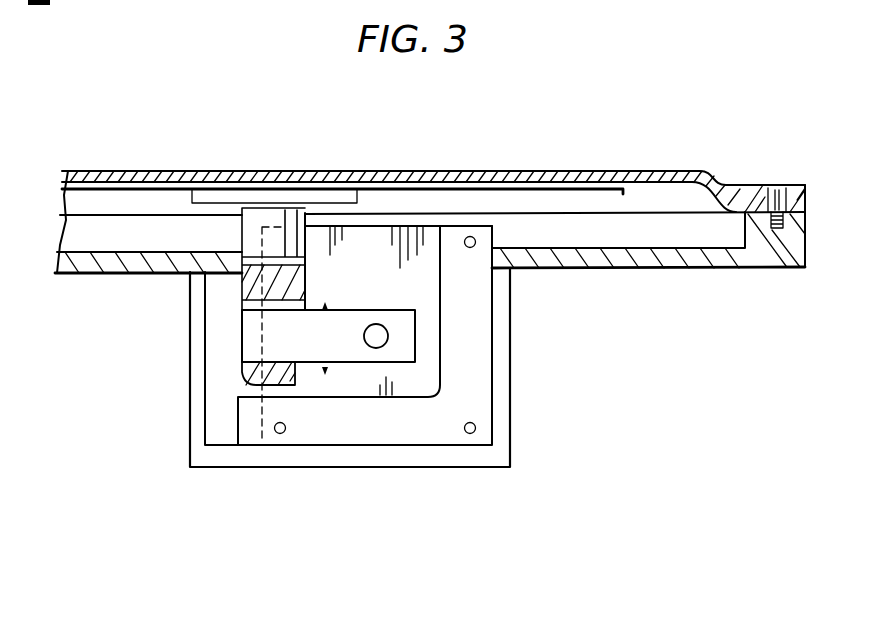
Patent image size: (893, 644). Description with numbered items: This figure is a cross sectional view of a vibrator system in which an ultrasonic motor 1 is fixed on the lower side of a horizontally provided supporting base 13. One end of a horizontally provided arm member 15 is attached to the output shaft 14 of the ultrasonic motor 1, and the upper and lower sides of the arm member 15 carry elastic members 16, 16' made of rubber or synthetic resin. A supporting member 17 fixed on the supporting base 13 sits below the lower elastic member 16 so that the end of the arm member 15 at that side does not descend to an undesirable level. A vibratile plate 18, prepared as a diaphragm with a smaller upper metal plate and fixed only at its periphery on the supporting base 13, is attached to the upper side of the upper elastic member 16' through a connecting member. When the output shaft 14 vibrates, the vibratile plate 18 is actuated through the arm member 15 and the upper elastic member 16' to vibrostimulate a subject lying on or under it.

The ultrasonic motor 1 is at (410, 383).
The supporting base 13 is at (653, 255).
The output shaft 14 is at (388, 340).
The arm member 15 is at (247, 348).
The lower elastic member 16 is at (204, 428).
The upper elastic member 16' is at (209, 324).
The supporting member 17 is at (338, 430).
The vibratile plate 18 is at (437, 170).